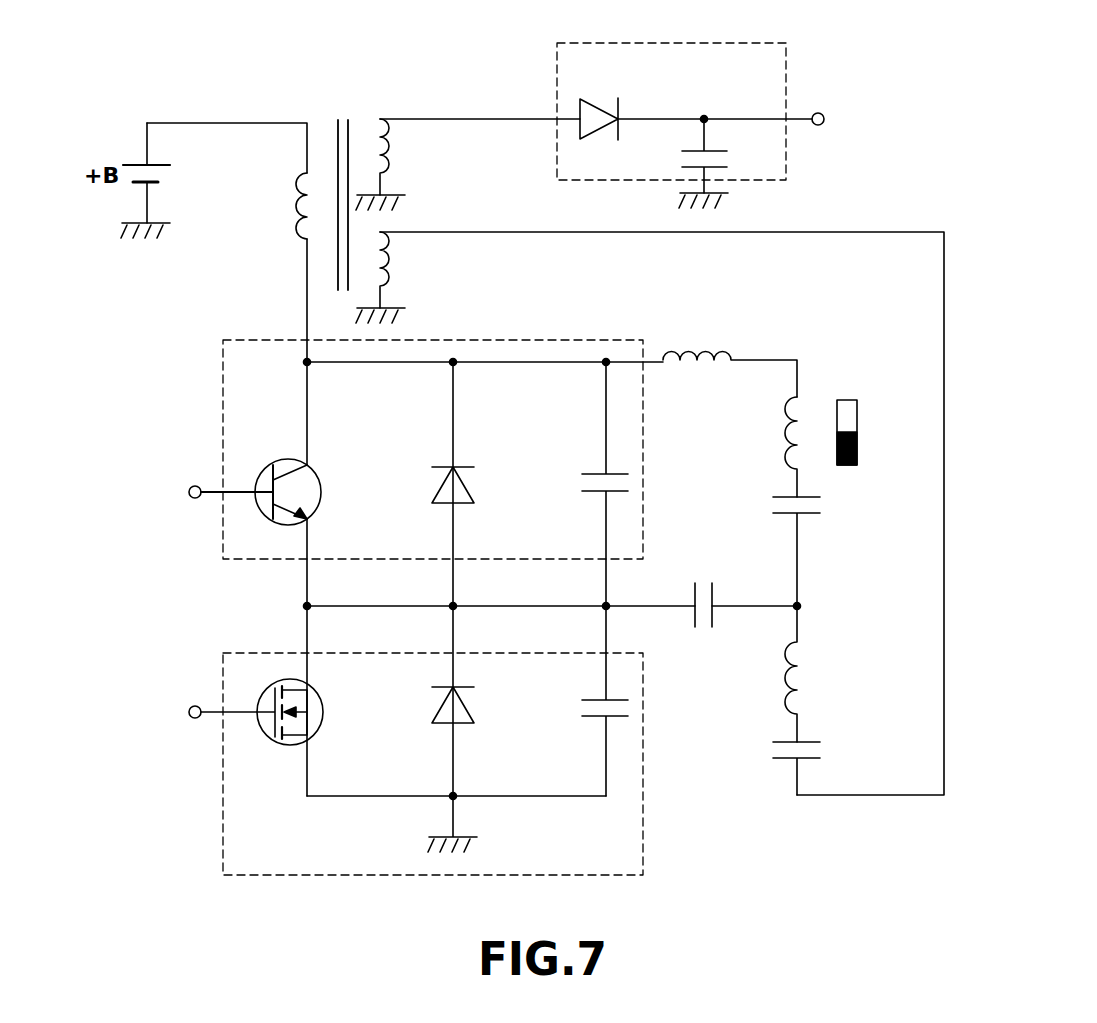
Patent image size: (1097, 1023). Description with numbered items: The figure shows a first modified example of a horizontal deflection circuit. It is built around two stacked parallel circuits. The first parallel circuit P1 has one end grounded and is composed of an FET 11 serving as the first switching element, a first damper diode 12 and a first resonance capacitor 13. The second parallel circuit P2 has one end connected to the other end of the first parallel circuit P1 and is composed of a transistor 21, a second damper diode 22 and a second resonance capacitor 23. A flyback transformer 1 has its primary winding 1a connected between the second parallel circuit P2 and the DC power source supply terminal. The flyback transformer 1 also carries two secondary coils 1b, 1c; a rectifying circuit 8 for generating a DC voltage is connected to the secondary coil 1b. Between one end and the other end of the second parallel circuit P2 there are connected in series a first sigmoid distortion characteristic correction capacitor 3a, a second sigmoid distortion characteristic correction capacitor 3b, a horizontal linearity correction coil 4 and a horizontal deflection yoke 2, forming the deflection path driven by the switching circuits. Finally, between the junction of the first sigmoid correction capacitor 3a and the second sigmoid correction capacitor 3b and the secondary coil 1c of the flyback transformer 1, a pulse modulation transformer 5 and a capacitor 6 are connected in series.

The flyback transformer 1 is at (323, 116).
The primary winding 1a is at (283, 206).
The secondary coil 1b is at (398, 151).
The secondary coil 1c is at (398, 264).
The horizontal deflection yoke 2 is at (685, 335).
The first sigmoid distortion characteristic correction capacitor 3a is at (700, 565).
The second sigmoid distortion characteristic correction capacitor 3b is at (828, 505).
The horizontal linearity correction coil 4 is at (815, 402).
The pulse modulation transformer 5 is at (815, 648).
The capacitor 6 is at (772, 748).
The rectifying circuit 8 is at (553, 88).
The FET 11 is at (270, 742).
The first damper diode 12 is at (437, 722).
The first resonance capacitor 13 is at (590, 722).
The transistor 21 is at (270, 466).
The second damper diode 22 is at (432, 488).
The second resonance capacitor 23 is at (578, 478).
The first parallel circuit P1 is at (220, 698).
The second parallel circuit P2 is at (220, 385).